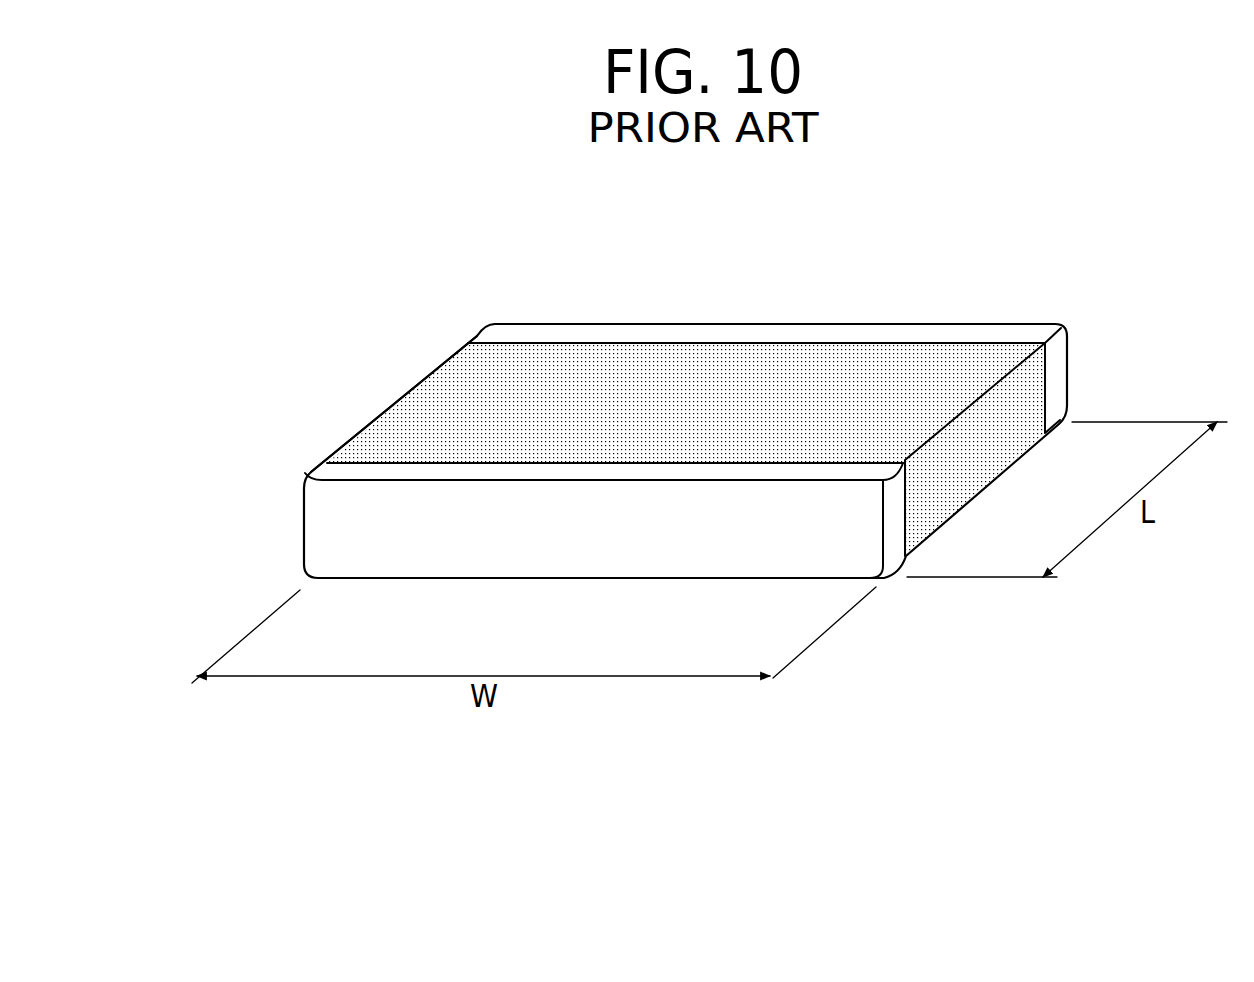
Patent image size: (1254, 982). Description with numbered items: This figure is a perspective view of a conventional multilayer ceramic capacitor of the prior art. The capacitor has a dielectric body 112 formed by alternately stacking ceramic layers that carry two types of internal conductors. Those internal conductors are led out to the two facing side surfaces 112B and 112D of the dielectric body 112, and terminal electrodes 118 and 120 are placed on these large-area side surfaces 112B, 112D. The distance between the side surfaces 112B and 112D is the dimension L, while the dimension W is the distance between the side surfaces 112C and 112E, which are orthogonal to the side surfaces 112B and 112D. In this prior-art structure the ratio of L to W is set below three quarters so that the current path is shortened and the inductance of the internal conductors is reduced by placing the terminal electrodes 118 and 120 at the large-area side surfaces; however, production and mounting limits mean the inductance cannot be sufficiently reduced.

The dielectric body 112 is at (440, 388).
The side surface 112B is at (820, 323).
The side surface 112C is at (1037, 381).
The side surface 112D is at (715, 552).
The side surface 112E is at (372, 416).
The terminal electrode 118 is at (697, 333).
The terminal electrode 120 is at (520, 553).